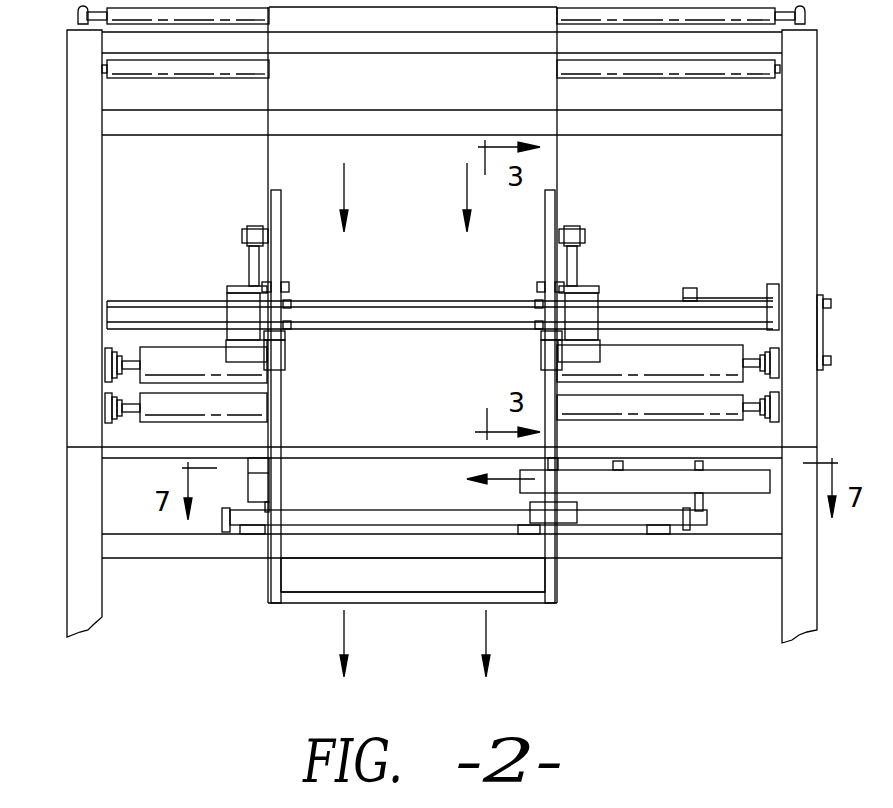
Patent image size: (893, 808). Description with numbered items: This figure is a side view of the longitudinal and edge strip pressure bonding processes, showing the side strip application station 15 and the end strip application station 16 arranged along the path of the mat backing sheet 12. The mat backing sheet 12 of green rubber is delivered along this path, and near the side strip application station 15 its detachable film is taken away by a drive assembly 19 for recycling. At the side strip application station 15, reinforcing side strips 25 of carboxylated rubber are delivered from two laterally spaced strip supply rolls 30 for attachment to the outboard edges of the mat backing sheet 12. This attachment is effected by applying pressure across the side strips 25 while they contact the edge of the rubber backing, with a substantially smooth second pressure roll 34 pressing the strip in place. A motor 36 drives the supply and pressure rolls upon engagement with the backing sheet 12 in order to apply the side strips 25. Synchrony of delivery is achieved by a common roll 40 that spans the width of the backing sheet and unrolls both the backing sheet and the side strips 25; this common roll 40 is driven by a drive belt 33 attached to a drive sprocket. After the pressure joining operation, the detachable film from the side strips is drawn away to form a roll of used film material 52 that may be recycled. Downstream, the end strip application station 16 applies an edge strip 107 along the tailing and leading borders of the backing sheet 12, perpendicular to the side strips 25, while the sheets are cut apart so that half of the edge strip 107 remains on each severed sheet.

The mat backing sheet 12 is at (530, 567).
The side strip application station 15 is at (185, 218).
The end strip application station 16 is at (768, 526).
The drive assembly 19 is at (160, 398).
The side strip 25 is at (275, 202).
The strip supply roll 30 is at (267, 230).
The drive belt 33 is at (824, 322).
The second pressure roll 34 is at (284, 335).
The motor 36 is at (238, 287).
The common roll 40 is at (156, 360).
The roll of used film material 52 is at (284, 350).
The edge strip 107 is at (302, 597).